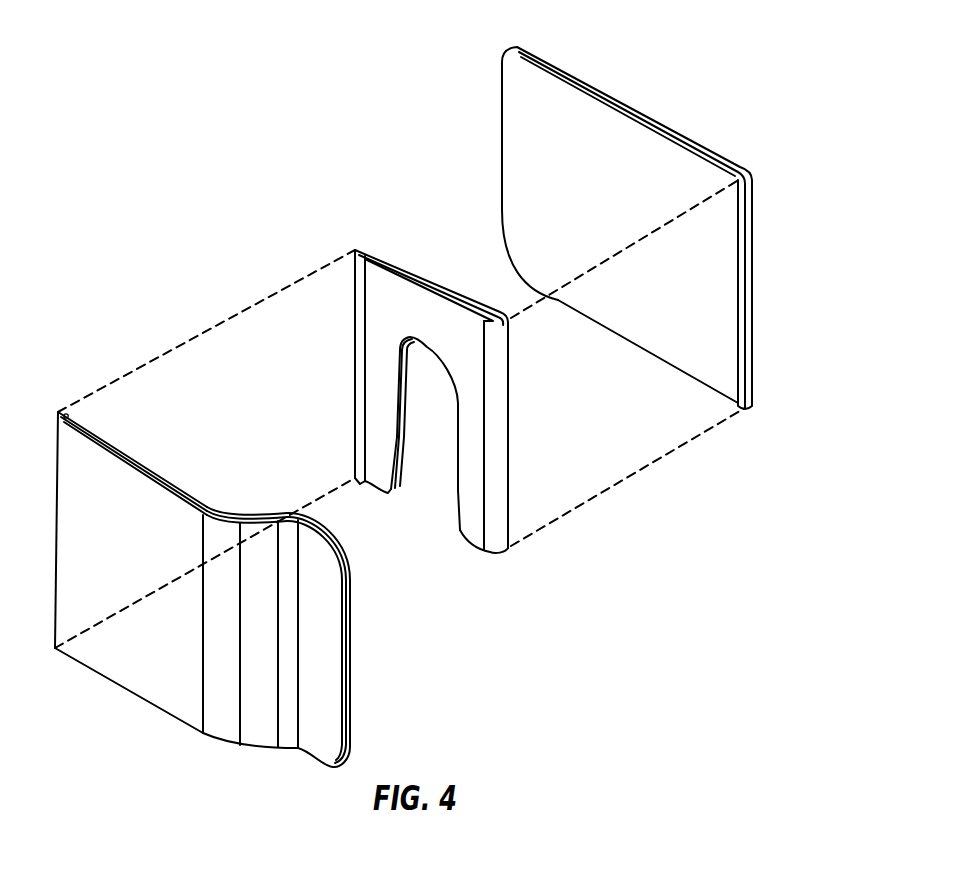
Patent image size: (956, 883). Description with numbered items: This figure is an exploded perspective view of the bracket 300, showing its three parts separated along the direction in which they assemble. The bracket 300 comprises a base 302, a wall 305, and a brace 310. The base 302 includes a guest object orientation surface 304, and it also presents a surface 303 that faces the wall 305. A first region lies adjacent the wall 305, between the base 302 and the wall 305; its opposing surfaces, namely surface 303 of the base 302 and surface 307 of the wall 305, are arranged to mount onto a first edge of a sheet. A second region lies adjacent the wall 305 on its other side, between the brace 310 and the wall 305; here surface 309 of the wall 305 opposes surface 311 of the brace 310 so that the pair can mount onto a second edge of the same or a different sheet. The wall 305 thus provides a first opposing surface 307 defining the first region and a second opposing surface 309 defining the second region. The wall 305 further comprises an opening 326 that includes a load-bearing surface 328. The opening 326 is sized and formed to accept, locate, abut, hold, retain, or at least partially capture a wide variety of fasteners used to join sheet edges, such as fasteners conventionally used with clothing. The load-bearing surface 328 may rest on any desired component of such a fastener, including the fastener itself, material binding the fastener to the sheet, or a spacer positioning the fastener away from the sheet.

The bracket 300 is at (240, 140).
The base 302 is at (352, 710).
The surface 303 is at (132, 433).
The guest object orientation surface 304 is at (150, 662).
The wall 305 is at (387, 248).
The surface 307 is at (397, 292).
The surface 309 is at (533, 373).
The brace 310 is at (553, 57).
The surface 311 is at (534, 150).
The opening 326 is at (423, 490).
The load-bearing surface 328 is at (428, 347).